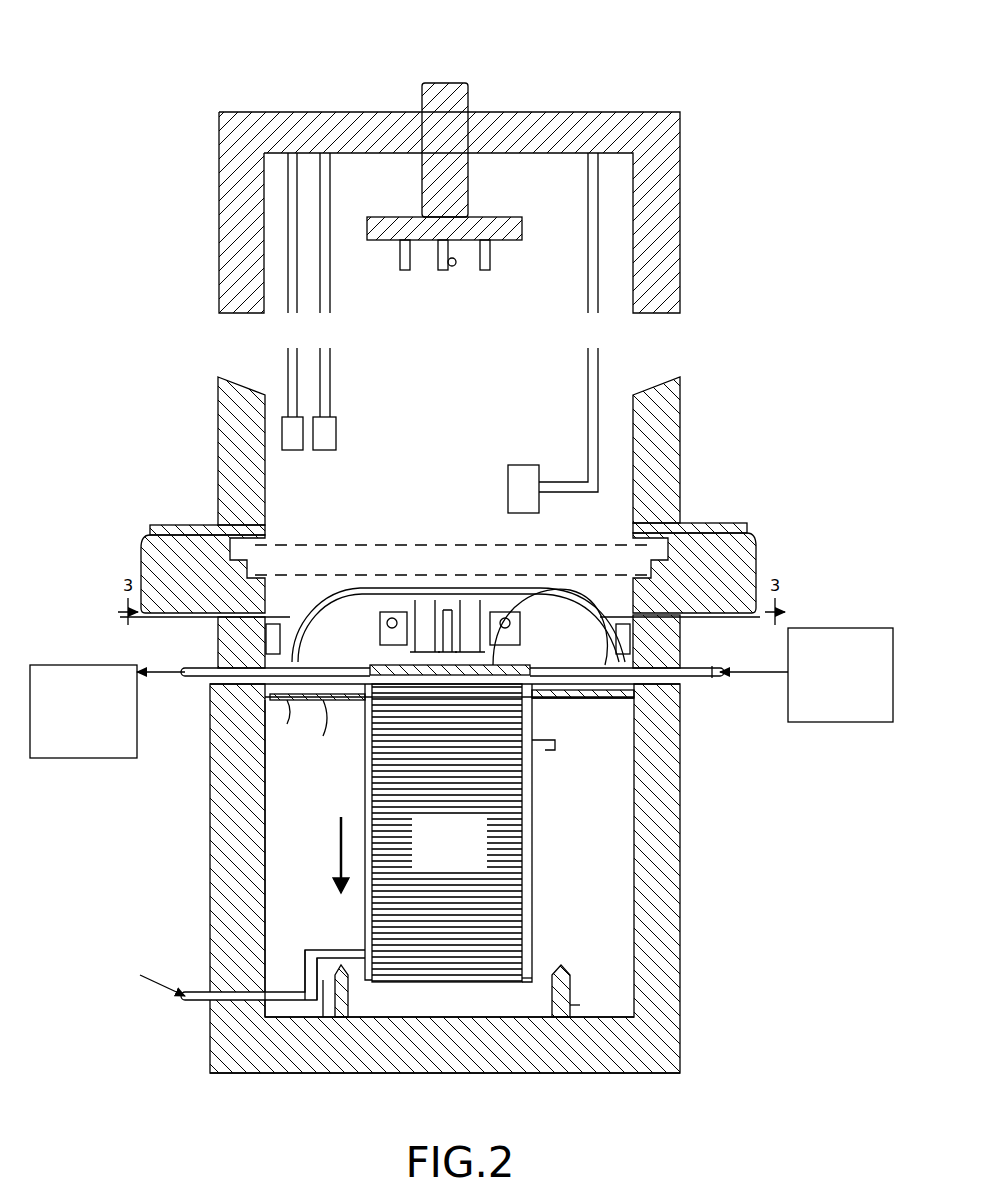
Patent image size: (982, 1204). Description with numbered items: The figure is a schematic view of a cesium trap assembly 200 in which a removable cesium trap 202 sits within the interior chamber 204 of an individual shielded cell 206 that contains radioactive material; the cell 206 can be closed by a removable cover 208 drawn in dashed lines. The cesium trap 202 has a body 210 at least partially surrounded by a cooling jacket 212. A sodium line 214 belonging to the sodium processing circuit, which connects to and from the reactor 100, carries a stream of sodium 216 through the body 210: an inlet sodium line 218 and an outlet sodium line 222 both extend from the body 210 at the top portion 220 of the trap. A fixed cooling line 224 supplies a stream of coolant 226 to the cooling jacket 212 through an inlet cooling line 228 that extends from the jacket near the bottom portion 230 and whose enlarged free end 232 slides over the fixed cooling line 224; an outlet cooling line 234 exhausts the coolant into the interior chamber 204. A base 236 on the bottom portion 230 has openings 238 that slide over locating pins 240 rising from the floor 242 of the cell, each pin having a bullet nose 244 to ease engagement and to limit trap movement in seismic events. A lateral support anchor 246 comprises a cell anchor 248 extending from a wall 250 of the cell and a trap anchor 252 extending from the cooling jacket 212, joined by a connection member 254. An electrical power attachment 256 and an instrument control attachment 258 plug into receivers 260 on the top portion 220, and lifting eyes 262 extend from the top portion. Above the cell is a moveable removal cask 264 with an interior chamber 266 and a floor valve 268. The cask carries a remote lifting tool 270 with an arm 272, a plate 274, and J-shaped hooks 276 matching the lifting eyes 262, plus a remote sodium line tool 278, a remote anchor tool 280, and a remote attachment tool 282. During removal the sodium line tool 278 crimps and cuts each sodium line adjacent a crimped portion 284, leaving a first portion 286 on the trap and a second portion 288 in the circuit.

The reactor 100 is at (461, 693).
The cesium trap assembly 200 is at (459, 904).
The cesium trap 202 is at (495, 833).
The interior chamber 204 is at (606, 852).
The shielded cell 206 is at (682, 905).
The removable cover 208 is at (334, 545).
The body 210 is at (535, 868).
The cooling jacket 212 is at (535, 895).
The sodium line 214 is at (330, 640).
The stream of sodium 216 is at (770, 678).
The inlet sodium line 218 is at (700, 690).
The top portion 220 is at (540, 650).
The outlet sodium line 222 is at (195, 668).
The fixed cooling line 224 is at (195, 990).
The stream of coolant 226 is at (147, 973).
The inlet cooling line 228 is at (340, 965).
The bottom portion 230 is at (535, 952).
The free end 232 is at (306, 960).
The outlet cooling line 234 is at (550, 752).
The base 236 is at (449, 1001).
The opening 238 is at (572, 985).
The locating pin 240 is at (580, 1005).
The floor 242 is at (380, 1020).
The bullet nose 244 is at (522, 982).
The support anchor 246 is at (598, 700).
The cell anchor 248 is at (288, 712).
The wall 250 is at (268, 830).
The trap anchor 252 is at (330, 712).
The connection member 254 is at (323, 737).
The electrical power attachment 256 is at (388, 612).
The instrument control attachment 258 is at (505, 612).
The receiver 260 is at (425, 600).
The lifting eye 262 is at (378, 610).
The removal cask 264 is at (451, 212).
The interior chamber 266 is at (268, 222).
The floor valve 268 is at (712, 522).
The remote lifting tool 270 is at (470, 163).
The arm 272 is at (470, 100).
The plate 274 is at (523, 232).
The hook 276 is at (452, 270).
The remote sodium line tool 278 is at (292, 450).
The remote anchor tool 280 is at (336, 450).
The remote attachment tool 282 is at (508, 492).
The crimped portion 284 is at (281, 634).
The first portion 286 is at (372, 665).
The second portion 288 is at (205, 684).